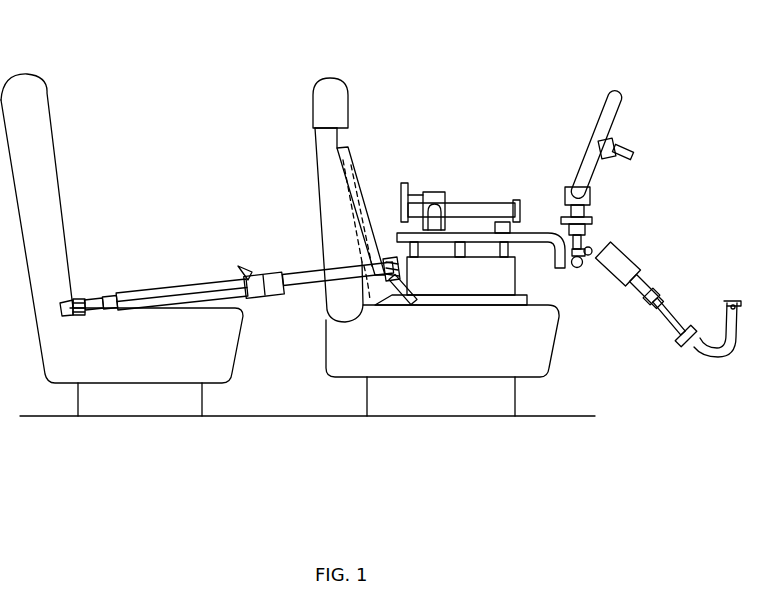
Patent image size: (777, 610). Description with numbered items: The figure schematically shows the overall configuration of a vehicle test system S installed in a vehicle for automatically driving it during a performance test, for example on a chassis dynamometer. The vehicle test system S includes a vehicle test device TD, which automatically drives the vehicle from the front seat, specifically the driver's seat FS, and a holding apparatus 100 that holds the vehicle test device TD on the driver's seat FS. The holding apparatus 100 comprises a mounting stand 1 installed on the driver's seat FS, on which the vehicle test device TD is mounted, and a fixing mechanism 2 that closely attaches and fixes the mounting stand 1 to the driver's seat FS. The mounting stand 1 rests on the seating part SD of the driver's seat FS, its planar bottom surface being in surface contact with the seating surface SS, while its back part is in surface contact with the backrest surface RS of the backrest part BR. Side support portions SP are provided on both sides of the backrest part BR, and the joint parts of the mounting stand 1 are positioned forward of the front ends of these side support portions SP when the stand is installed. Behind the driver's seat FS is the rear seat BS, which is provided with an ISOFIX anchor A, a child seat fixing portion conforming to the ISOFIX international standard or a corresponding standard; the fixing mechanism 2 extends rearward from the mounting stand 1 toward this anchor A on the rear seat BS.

The rear seat BS is at (47, 92).
The front seat FS is at (312, 88).
The vehicle test system S is at (519, 93).
The backrest part BR is at (315, 140).
The backrest surface RS is at (343, 143).
The side support portions SP is at (375, 250).
The vehicle test device TD is at (478, 202).
The holding apparatus 100 is at (255, 192).
The fixing mechanism 2 is at (259, 249).
The mounting stand 1 is at (338, 228).
The ISOFIX anchor A is at (75, 300).
The seating surface SS is at (550, 306).
The seating part SD is at (553, 345).